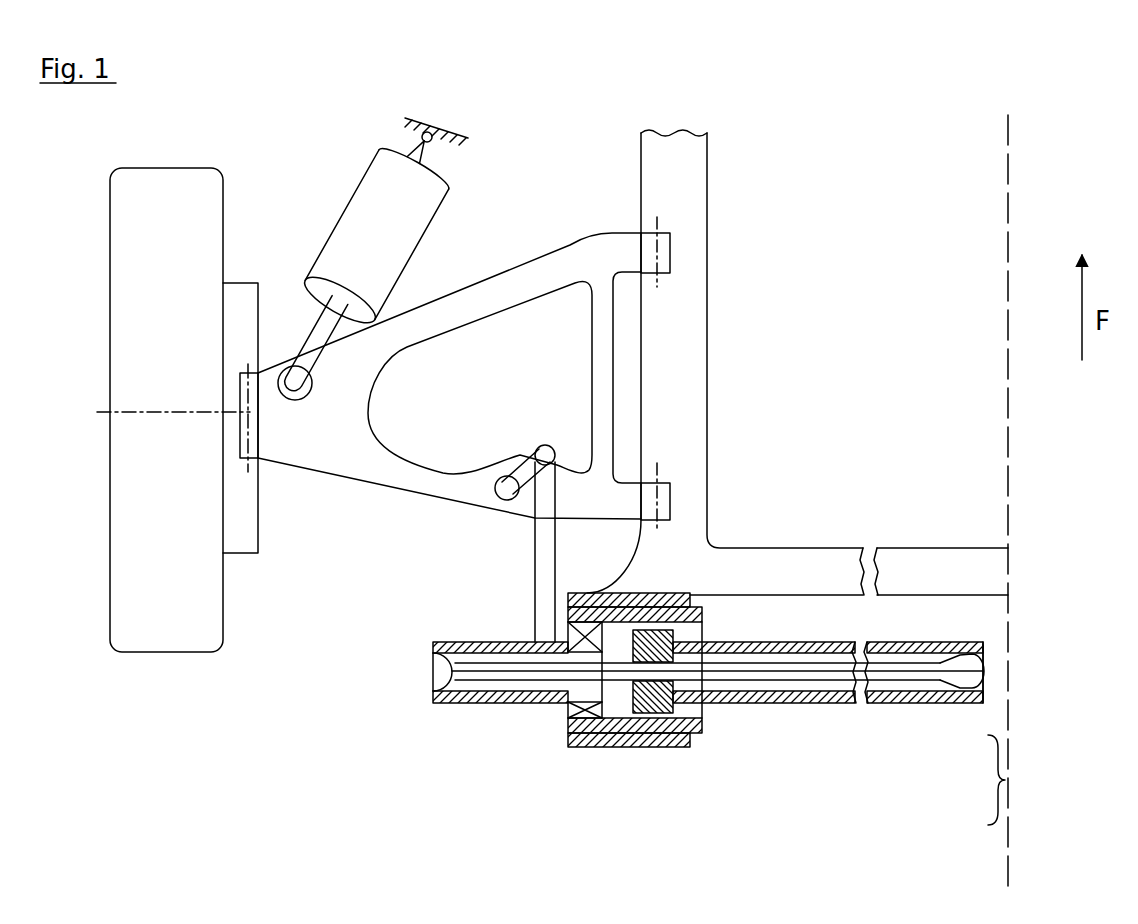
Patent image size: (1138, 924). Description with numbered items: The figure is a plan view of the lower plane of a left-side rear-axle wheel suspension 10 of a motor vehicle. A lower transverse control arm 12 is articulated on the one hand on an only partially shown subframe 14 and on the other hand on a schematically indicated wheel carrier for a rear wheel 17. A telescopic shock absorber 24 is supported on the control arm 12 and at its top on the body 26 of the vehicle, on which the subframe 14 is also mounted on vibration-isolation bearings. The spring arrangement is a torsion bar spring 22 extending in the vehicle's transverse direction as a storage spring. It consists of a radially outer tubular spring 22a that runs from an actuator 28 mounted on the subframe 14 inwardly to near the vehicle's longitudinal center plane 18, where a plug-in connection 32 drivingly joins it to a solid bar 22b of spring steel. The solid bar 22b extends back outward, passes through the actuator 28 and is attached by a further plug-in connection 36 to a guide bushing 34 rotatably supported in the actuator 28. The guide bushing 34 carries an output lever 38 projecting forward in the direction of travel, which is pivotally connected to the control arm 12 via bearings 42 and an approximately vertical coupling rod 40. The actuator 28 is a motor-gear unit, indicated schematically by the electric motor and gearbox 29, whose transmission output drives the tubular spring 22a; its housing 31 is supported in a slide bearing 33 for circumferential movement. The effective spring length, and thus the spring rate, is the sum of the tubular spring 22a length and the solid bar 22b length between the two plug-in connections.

The wheel suspension 10 is at (538, 206).
The lower transverse control arm 12 is at (478, 320).
The subframe 14 is at (782, 548).
The rear wheel 17 is at (183, 273).
The vehicle longitudinal center plane 18 is at (1010, 470).
The torsion bar spring 22 is at (956, 733).
The tubular spring 22a is at (908, 705).
The solid bar 22b is at (893, 705).
The telescopic shock absorber 24 is at (301, 295).
The body 26 is at (407, 119).
The actuator 28 is at (712, 620).
The electric motor and gearbox 29 is at (648, 720).
The housing 31 is at (703, 725).
The plug-in connection 32 is at (983, 672).
The slide bearing 33 is at (553, 738).
The guide bushing 34 is at (505, 705).
The plug-in connection 36 is at (433, 688).
The output lever 38 is at (537, 607).
The coupling rod 40 is at (533, 452).
The bearings 42 is at (546, 444).